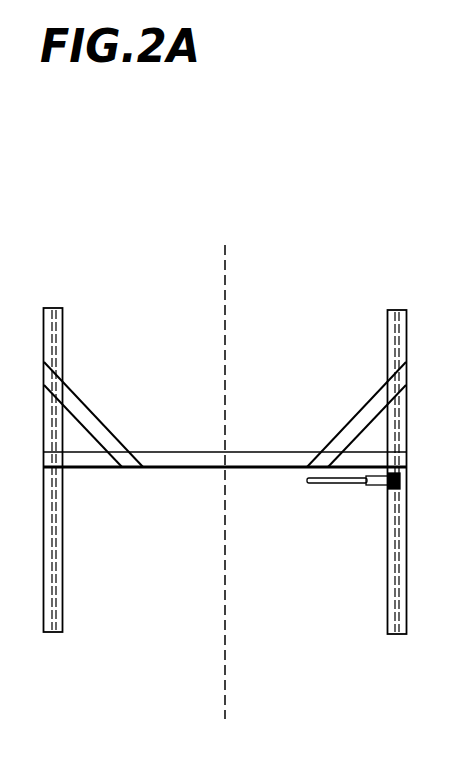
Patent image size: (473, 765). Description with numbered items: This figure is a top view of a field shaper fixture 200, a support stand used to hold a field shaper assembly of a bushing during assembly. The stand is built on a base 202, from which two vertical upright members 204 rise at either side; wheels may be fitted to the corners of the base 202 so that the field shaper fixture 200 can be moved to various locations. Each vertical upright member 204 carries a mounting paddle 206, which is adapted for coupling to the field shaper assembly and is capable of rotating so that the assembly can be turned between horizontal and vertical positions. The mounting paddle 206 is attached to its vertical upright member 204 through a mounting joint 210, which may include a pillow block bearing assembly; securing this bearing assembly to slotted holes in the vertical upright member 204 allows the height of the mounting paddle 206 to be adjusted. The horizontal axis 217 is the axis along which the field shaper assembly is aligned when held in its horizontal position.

The field shaper fixture 200 is at (232, 182).
The base 202 is at (387, 338).
The vertical upright member 204 is at (472, 363).
The mounting paddle 206 is at (318, 486).
The mounting joint 210 is at (472, 431).
The horizontal axis 217 is at (225, 292).